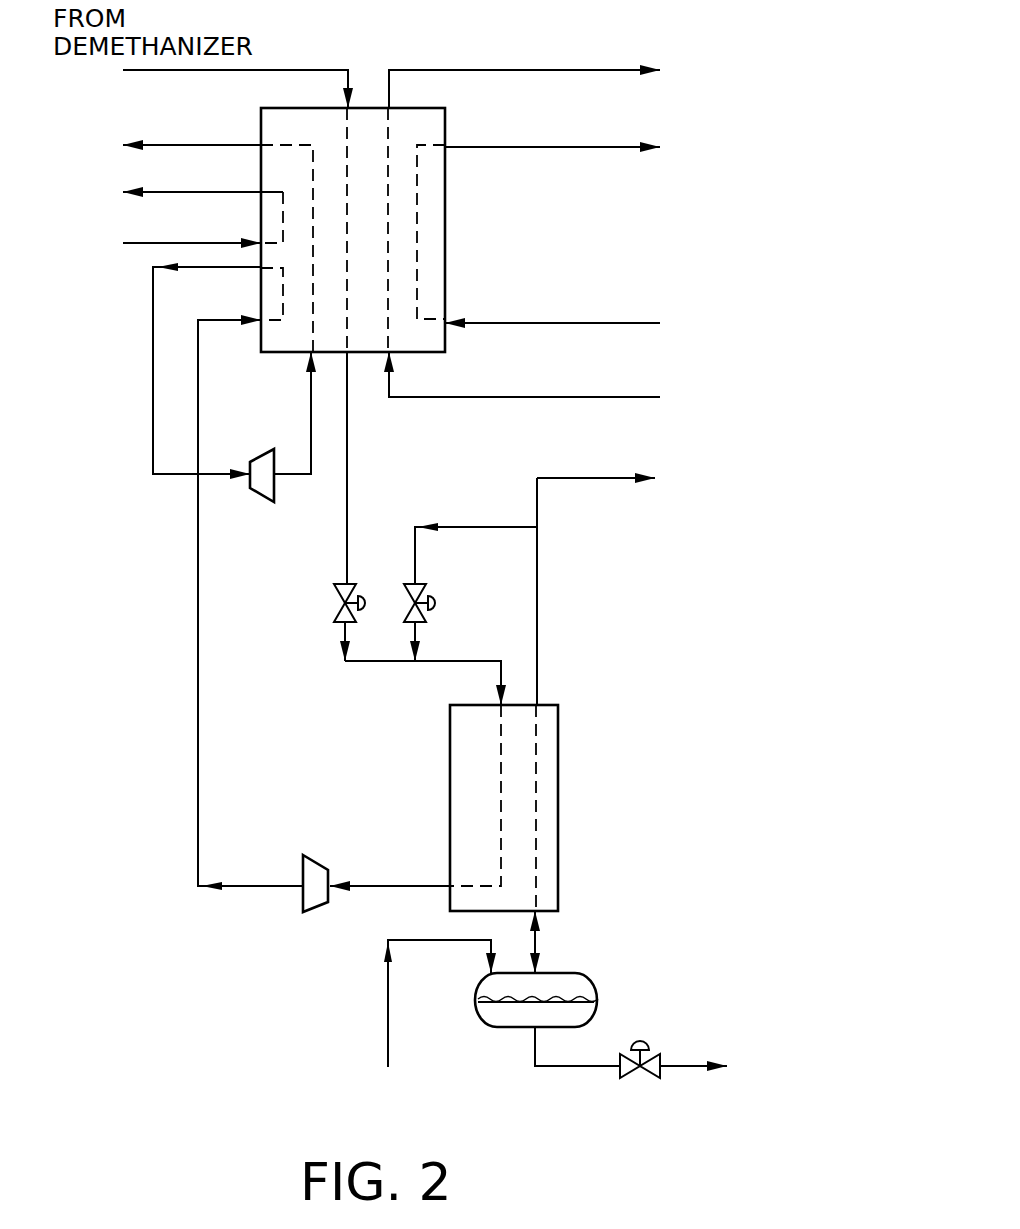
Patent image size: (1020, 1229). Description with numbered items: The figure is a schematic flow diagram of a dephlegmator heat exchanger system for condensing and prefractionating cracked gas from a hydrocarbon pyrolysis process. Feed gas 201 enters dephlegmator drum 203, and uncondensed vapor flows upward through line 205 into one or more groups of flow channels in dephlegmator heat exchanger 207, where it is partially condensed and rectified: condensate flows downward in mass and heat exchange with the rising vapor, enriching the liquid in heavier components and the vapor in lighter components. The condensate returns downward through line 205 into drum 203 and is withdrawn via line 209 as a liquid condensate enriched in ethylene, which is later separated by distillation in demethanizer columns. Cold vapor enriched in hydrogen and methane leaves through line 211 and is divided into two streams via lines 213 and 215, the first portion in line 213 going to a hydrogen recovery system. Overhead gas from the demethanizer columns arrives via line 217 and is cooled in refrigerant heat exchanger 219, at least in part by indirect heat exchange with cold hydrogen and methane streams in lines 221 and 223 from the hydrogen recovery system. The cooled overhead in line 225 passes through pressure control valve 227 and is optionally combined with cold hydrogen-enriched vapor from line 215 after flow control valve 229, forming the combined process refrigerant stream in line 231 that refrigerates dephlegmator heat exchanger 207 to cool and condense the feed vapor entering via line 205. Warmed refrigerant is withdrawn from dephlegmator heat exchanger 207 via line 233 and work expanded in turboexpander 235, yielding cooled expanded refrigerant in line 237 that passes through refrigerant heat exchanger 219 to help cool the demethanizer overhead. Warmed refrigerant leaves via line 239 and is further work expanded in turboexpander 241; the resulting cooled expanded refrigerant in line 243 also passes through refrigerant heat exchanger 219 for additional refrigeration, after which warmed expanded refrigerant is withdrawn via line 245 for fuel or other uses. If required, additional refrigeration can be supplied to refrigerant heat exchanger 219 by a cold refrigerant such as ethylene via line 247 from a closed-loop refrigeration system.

The feed gas 201 is at (385, 997).
The dephlegmator drum 203 is at (484, 1027).
The line 205 is at (540, 947).
The dephlegmator heat exchanger 207 is at (558, 807).
The line 209 is at (672, 1070).
The line 211 is at (538, 655).
The line 213 is at (596, 478).
The line 215 is at (440, 527).
The line 217 is at (213, 73).
The refrigerant heat exchanger 219 is at (445, 207).
The line 221 is at (541, 323).
The line 223 is at (512, 398).
The line 225 is at (348, 468).
The pressure control valve 227 is at (333, 593).
The flow control valve 229 is at (442, 603).
The line 231 is at (428, 666).
The line 233 is at (380, 882).
The turboexpander 235 is at (313, 856).
The line 237 is at (198, 690).
The line 239 is at (153, 391).
The turboexpander 241 is at (266, 499).
The line 243 is at (308, 402).
The line 245 is at (226, 147).
The line 247 is at (222, 243).